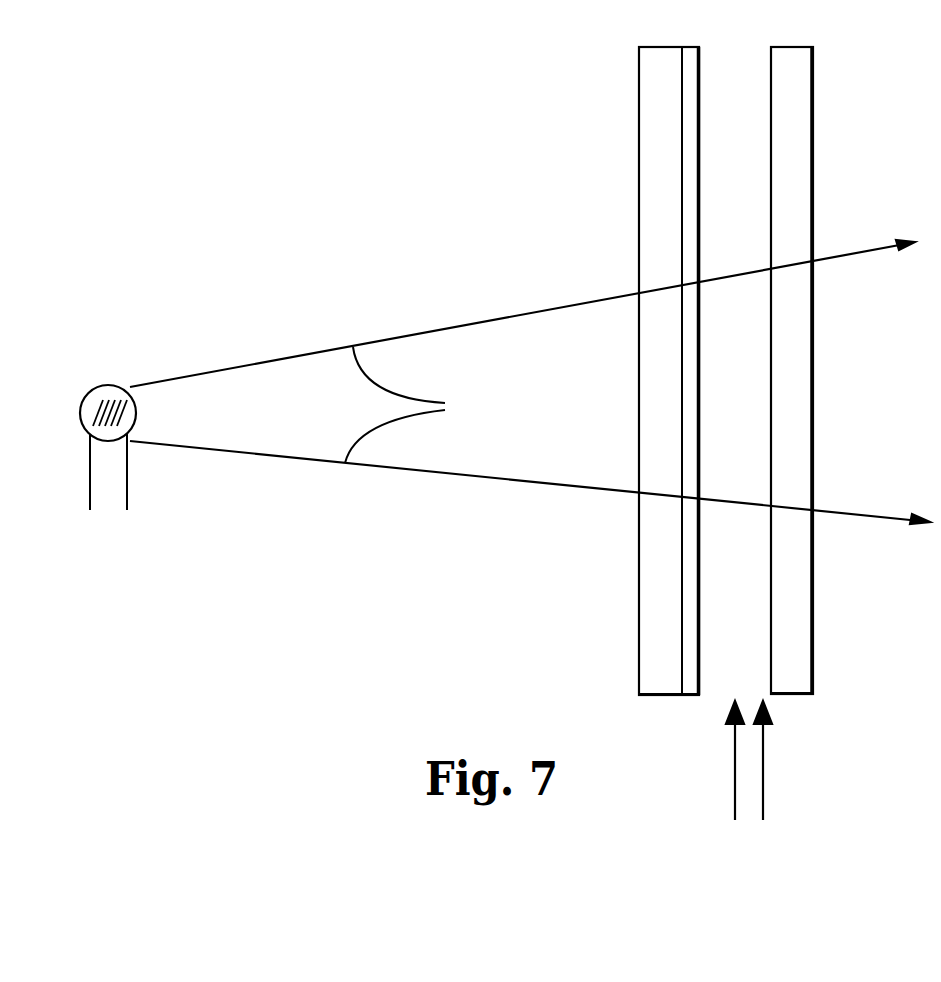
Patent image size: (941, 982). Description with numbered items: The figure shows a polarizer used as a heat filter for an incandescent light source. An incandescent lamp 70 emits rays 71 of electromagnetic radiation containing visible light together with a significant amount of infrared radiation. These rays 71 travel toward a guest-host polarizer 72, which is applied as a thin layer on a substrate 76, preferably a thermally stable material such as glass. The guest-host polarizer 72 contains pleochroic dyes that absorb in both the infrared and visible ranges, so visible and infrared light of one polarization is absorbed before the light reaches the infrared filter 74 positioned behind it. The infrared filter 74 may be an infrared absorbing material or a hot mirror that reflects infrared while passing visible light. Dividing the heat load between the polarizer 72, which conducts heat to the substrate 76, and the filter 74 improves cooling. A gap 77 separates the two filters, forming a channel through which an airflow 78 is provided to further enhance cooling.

The incandescent lamp 70 is at (80, 417).
The rays 71 is at (530, 382).
The guest-host polarizer 72 is at (694, 676).
The infrared filter 74 is at (818, 663).
The substrate 76 is at (660, 218).
The gap 77 is at (771, 45).
The airflow 78 is at (763, 763).